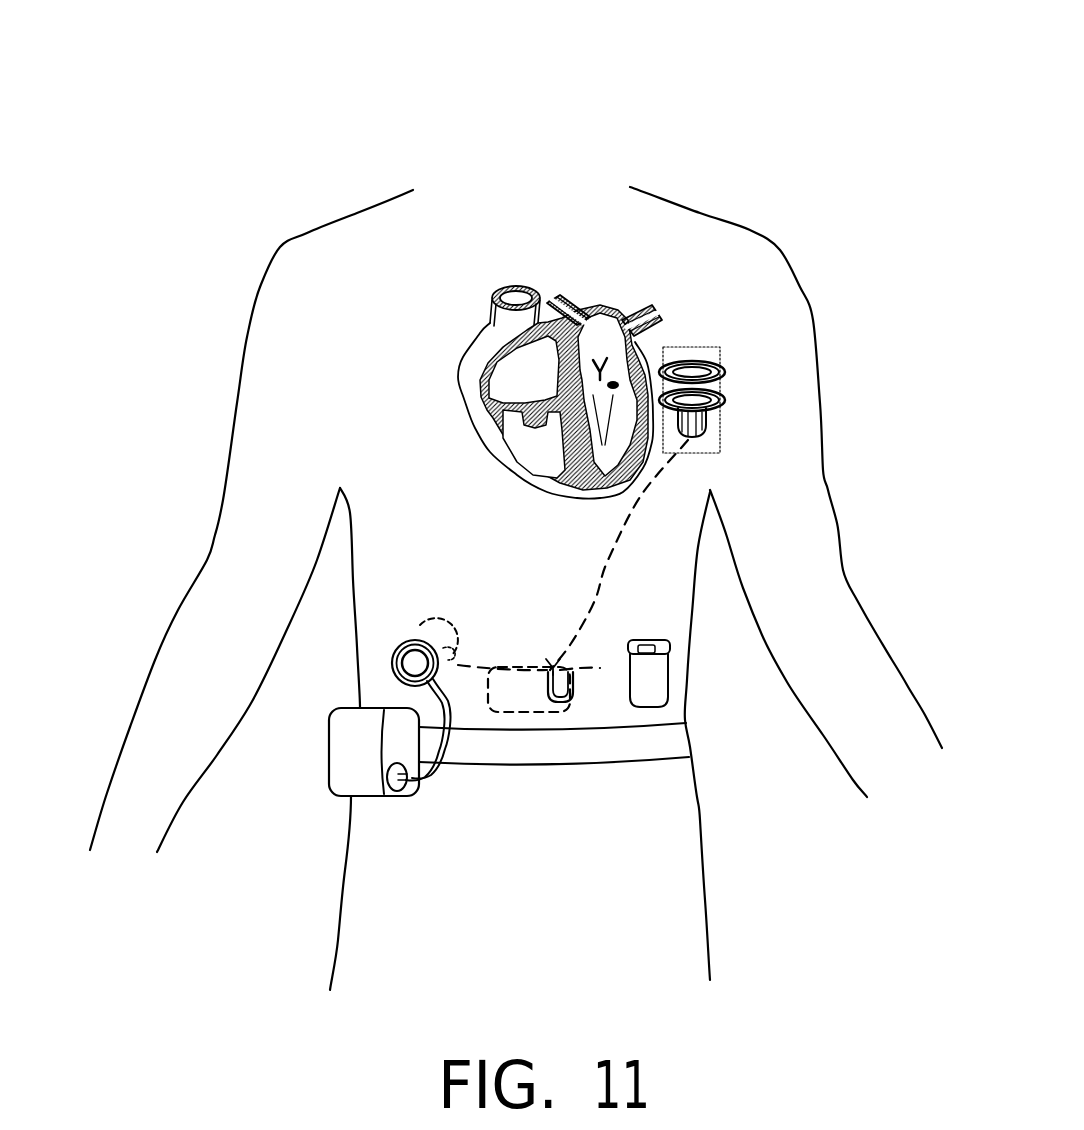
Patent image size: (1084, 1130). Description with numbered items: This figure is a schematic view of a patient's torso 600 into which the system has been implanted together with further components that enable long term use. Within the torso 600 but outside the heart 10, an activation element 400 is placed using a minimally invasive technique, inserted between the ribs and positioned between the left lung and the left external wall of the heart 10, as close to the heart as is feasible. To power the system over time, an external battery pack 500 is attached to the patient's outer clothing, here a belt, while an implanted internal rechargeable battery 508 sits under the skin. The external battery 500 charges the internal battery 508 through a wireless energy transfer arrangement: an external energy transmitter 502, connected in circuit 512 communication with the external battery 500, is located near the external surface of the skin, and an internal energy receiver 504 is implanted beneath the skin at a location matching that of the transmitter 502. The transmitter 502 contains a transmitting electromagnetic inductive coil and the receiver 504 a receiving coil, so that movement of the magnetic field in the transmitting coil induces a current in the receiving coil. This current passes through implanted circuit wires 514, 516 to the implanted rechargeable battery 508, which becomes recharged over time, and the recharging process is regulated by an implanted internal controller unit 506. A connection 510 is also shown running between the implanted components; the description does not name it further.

The patient's torso 600 is at (337, 193).
The heart 10 is at (565, 172).
The activation element 400 is at (709, 335).
The dashed lead to implant 510 is at (652, 482).
The implanted circuit wire 516 is at (603, 670).
The implanted internal rechargeable battery 508 is at (662, 662).
The implanted circuit wire 514 is at (493, 667).
The implanted internal controller unit 506 is at (527, 697).
The external energy transmitter 502 is at (407, 665).
The internal energy receiver 504 is at (447, 628).
The external battery pack 500 is at (343, 770).
The circuit 512 is at (413, 793).